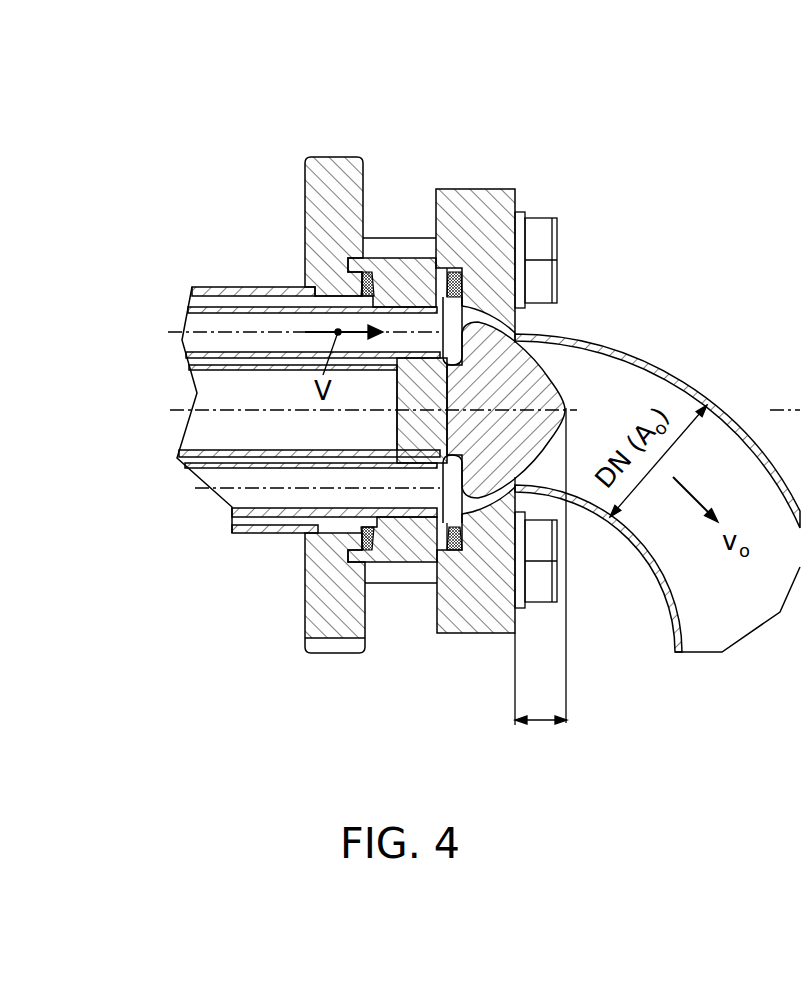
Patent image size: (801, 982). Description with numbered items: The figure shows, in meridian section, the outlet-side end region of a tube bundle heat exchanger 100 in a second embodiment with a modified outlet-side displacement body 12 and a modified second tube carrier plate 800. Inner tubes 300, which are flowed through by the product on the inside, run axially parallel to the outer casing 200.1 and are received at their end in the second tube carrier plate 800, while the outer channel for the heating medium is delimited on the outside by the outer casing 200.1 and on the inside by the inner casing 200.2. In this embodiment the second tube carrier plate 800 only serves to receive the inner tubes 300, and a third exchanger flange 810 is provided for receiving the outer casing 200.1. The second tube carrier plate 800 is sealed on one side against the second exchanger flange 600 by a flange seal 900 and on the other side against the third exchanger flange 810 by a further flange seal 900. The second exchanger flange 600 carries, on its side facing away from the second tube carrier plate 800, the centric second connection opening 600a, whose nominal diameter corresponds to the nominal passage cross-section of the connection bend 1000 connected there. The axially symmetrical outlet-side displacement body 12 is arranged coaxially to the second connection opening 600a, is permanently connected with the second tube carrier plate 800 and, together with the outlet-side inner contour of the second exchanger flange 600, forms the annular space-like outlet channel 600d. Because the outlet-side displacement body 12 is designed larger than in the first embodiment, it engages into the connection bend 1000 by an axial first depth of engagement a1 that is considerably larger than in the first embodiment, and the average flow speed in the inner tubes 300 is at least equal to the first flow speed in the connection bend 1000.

The tube bundle heat exchanger 100 is at (585, 266).
The outlet-side displacement body 12 is at (506, 394).
The outer casing 200.1 is at (272, 293).
The inner casing 200.2 is at (260, 450).
The inner tubes 300 is at (243, 332).
The second exchanger flange 600 is at (473, 223).
The second connection opening 600a is at (515, 477).
The annular space-like outlet channel 600d is at (482, 322).
The second tube carrier plate 800 is at (393, 270).
The third exchanger flange 810 is at (337, 192).
The flange seal 900 is at (367, 539).
The connection bend 1000 is at (647, 563).
The axial first depth of engagement a1 is at (541, 706).